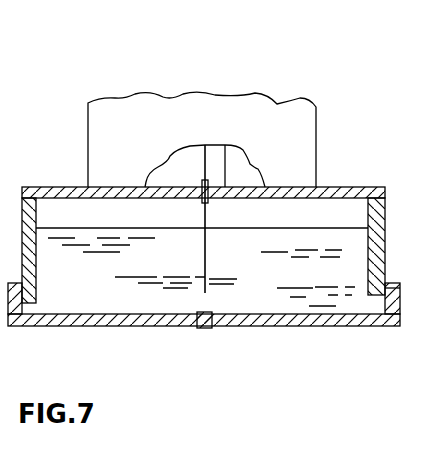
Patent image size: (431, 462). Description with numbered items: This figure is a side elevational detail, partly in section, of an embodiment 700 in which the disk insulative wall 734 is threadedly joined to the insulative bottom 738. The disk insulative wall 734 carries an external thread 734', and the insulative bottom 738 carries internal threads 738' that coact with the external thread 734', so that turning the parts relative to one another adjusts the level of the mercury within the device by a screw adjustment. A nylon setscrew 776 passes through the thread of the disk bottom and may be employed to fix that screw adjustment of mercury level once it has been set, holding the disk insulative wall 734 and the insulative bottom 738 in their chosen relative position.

The embodiment 700 is at (293, 60).
The disk insulative wall 734 is at (197, 175).
The external thread 734' is at (57, 250).
The insulative bottom 738 is at (204, 341).
The internal threads 738' is at (54, 320).
The nylon setscrew 776 is at (400, 290).